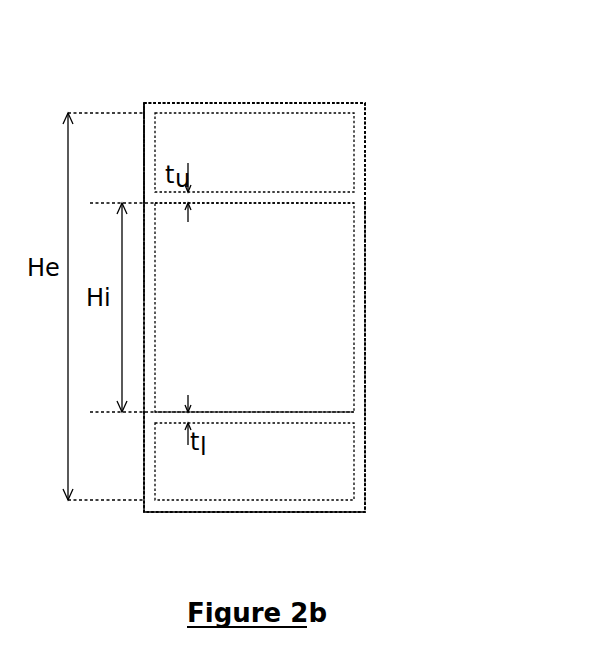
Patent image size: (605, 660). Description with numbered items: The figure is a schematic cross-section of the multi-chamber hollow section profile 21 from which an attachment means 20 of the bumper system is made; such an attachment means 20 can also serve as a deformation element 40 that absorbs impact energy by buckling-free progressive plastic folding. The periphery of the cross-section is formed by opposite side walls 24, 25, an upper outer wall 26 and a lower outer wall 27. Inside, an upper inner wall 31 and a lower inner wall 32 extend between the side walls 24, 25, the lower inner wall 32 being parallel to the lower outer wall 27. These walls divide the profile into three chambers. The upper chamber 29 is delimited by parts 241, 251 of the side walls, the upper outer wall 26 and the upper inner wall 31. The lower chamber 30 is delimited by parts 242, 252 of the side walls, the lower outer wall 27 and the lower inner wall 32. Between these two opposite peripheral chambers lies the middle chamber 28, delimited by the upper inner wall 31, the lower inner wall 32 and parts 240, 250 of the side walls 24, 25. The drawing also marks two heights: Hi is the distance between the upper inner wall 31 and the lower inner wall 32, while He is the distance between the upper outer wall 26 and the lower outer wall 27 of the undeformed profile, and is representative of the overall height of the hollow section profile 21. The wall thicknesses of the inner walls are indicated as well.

The attachment means 20 is at (308, 286).
The hollow section profile 21 is at (331, 286).
The deformation element 40 is at (387, 106).
The side wall 24 is at (144, 362).
The part of side wall 240 is at (144, 257).
The part of side wall 241 is at (145, 160).
The part of side wall 242 is at (144, 462).
The side wall 25 is at (365, 323).
The part of side wall 250 is at (365, 270).
The part of side wall 251 is at (365, 157).
The part of side wall 252 is at (365, 470).
The upper outer wall 26 is at (218, 107).
The lower outer wall 27 is at (288, 512).
The middle chamber 28 is at (283, 321).
The upper chamber 29 is at (246, 171).
The lower chamber 30 is at (278, 477).
The upper inner wall 31 is at (266, 203).
The lower inner wall 32 is at (273, 412).